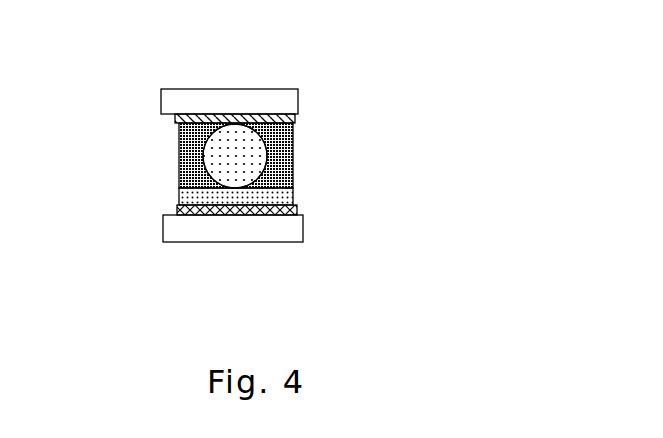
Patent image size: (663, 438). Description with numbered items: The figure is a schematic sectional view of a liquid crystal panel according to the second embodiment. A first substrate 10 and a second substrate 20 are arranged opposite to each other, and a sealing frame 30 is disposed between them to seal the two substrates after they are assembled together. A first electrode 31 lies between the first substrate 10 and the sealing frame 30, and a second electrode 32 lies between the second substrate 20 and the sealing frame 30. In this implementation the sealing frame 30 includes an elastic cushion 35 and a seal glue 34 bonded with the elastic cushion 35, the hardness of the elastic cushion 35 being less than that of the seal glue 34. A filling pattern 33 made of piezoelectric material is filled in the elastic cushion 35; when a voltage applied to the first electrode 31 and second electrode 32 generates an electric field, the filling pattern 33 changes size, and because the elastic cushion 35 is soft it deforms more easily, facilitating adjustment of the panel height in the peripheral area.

The first substrate 10 is at (263, 227).
The second substrate 20 is at (276, 102).
The sealing frame 30 is at (250, 177).
The first electrode 31 is at (210, 210).
The second electrode 32 is at (282, 118).
The filling pattern 33 is at (253, 158).
The seal glue 34 is at (192, 193).
The elastic cushion 35 is at (182, 162).